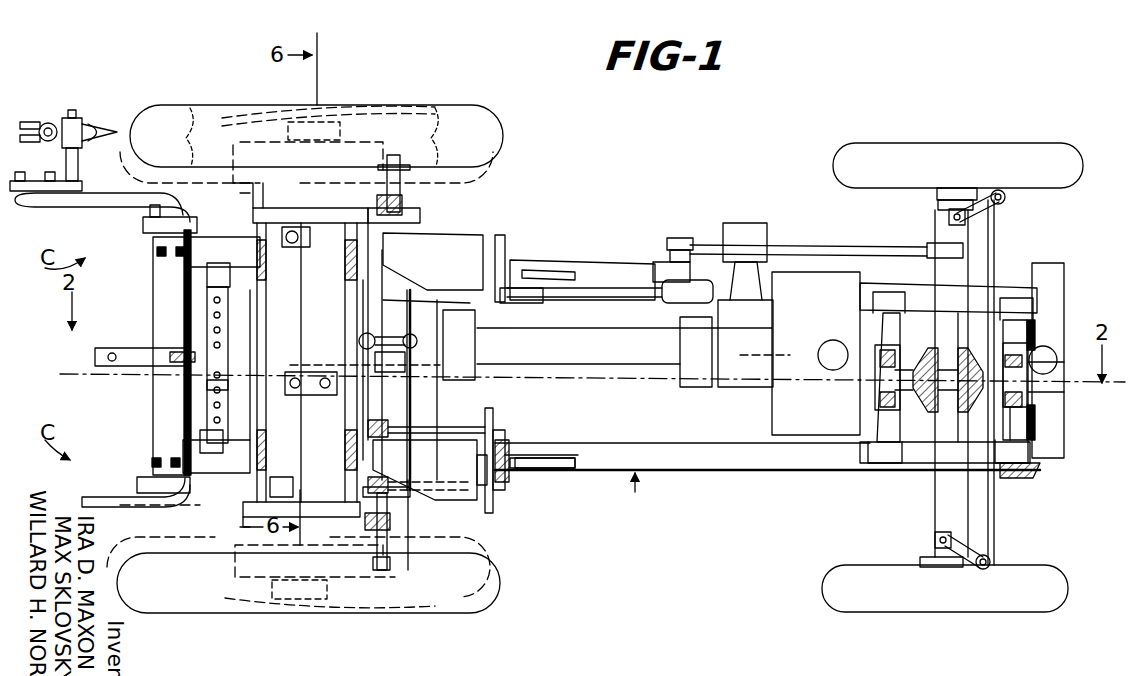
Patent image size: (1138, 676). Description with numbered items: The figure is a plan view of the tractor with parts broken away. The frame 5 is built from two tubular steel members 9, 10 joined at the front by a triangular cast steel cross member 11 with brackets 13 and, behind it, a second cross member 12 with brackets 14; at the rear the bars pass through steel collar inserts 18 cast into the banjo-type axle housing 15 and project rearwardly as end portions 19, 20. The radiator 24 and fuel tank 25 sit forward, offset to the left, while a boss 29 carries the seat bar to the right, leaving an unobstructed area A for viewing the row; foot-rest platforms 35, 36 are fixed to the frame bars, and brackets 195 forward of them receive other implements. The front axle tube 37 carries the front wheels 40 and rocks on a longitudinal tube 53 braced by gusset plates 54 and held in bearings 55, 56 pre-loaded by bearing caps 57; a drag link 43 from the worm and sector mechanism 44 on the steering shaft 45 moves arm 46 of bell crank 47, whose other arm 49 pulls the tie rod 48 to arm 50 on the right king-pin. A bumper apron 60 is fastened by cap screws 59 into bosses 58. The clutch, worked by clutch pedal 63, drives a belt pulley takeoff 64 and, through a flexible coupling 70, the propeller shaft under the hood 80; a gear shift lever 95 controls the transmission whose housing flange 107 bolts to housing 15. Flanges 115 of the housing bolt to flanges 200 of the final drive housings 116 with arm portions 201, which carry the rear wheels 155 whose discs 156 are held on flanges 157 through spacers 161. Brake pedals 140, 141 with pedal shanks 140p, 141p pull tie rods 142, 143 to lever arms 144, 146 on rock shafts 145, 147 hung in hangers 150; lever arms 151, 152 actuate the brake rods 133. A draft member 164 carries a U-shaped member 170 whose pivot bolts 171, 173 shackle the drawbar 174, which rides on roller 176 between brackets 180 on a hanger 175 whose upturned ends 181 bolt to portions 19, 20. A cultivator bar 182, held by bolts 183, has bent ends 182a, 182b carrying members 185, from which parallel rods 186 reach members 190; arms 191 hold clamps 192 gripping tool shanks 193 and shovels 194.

The frame 5 is at (632, 498).
The tubular frame member 9 is at (597, 275).
The tubular frame member 10 is at (702, 462).
The cross member 11 is at (1030, 475).
The cross member 12 is at (887, 418).
The brackets 13 is at (1010, 310).
The brackets 14 is at (893, 300).
The axle housing 15 is at (280, 410).
The steel collar inserts 18 is at (263, 275).
The rear end portion 19 is at (228, 238).
The rear end portion 20 is at (235, 470).
The radiator 24 is at (1048, 430).
The fuel tank 25 is at (785, 410).
The boss 29 is at (318, 398).
The foot-rest platform 35 is at (455, 245).
The foot-rest platform 36 is at (478, 480).
The steel pipe member 37 is at (947, 512).
The front wheels 40 is at (1040, 160).
The drag link 43 is at (810, 247).
The worm and sector mechanism 44 is at (665, 252).
The steering shaft 45 is at (625, 300).
The arm 46 is at (950, 228).
The bell crank lever 47 is at (948, 212).
The tie rod 48 is at (995, 236).
The arm 49 is at (1005, 200).
The arm 50 is at (990, 545).
The longitudinally extending tube 53 is at (908, 368).
The triangular gusset plates 54 is at (970, 362).
The bearing 55 is at (1035, 400).
The bearing 56 is at (870, 395).
The bearing caps 57 is at (878, 355).
The bosses 58 is at (1032, 325).
The cap screws 59 is at (1003, 316).
The bumper apron 60 is at (1012, 445).
The clutch pedal 63 is at (505, 262).
The belt pulley takeoff 64 is at (745, 240).
The flexible coupling 70 is at (693, 385).
The hood 80 is at (580, 365).
The gear shift lever 95 is at (360, 335).
The flange 107 is at (375, 358).
The flanges 115 is at (330, 216).
The final drive housings 116 is at (245, 191).
The brake rod 133 is at (387, 190).
The brake pedal 140 is at (493, 415).
The pedal shank 140p is at (525, 453).
The brake pedal 141 is at (500, 492).
The pedal shank 141p is at (525, 472).
The tie rod 142 is at (488, 410).
The tie rod 143 is at (445, 482).
The lever arm 144 is at (400, 428).
The rock shaft 145 is at (395, 420).
The lever arm 146 is at (392, 478).
The rock shaft 147 is at (395, 520).
The hangers 150 is at (385, 258).
The lever arm 151 is at (405, 205).
The lever arm 152 is at (405, 555).
The rear traction wheels 155 is at (470, 128).
The wheel disc 156 is at (385, 125).
The flange 157 is at (318, 142).
The spacers 161 is at (340, 128).
The draft tongue frame member 164 is at (420, 294).
The U-shaped member 170 is at (425, 360).
The transverse pivot bolt 171 is at (430, 345).
The vertical pivot bolt 173 is at (363, 360).
The draft tongue 174 is at (125, 366).
The U-shaped hanger 175 is at (205, 400).
The roller 176 is at (180, 363).
The brackets 180 is at (345, 320).
The upturned ends 181 is at (207, 282).
The transversely extending bar 182 is at (170, 305).
The downwardly extended end 182a is at (215, 262).
The downwardly extended end 182b is at (185, 505).
The bolts 183 is at (165, 255).
The member 185 is at (145, 222).
The parallel rods 186 is at (95, 207).
The member 190 is at (42, 192).
The horizontal arm 191 is at (78, 165).
The tool shank clamp 192 is at (72, 130).
The tool shank 193 is at (48, 128).
The cultivator shovel 194 is at (100, 130).
The brackets 195 is at (550, 270).
The flanges 200 is at (295, 208).
The upper transverse hollow arm portion 201 is at (308, 246).
The unobstructed area A is at (657, 422).